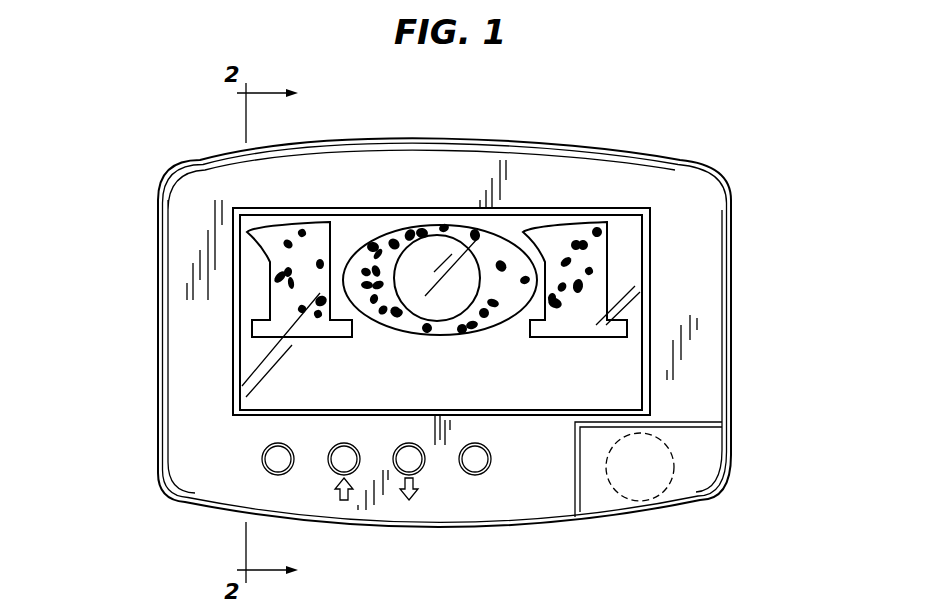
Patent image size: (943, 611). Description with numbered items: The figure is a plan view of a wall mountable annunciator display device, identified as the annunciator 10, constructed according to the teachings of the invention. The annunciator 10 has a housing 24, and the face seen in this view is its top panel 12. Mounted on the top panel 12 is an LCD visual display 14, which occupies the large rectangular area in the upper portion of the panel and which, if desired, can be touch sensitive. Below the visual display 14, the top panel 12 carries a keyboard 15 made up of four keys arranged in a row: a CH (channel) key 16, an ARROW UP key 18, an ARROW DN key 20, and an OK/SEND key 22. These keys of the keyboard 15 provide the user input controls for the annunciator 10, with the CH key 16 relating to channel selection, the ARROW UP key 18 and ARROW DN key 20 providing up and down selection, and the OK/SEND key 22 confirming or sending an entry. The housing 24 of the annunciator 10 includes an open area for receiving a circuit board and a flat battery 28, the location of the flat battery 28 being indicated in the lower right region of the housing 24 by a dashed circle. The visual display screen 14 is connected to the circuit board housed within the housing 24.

The annunciator 10 is at (770, 166).
The top panel 12 is at (690, 247).
The LCD visual display 14 is at (622, 237).
The keyboard 15 is at (200, 465).
The CH (channel) key 16 is at (278, 459).
The ARROW UP key 18 is at (340, 462).
The ARROW DN key 20 is at (412, 462).
The OK/SEND key 22 is at (478, 458).
The housing 24 is at (200, 187).
The flat battery 28 is at (676, 470).